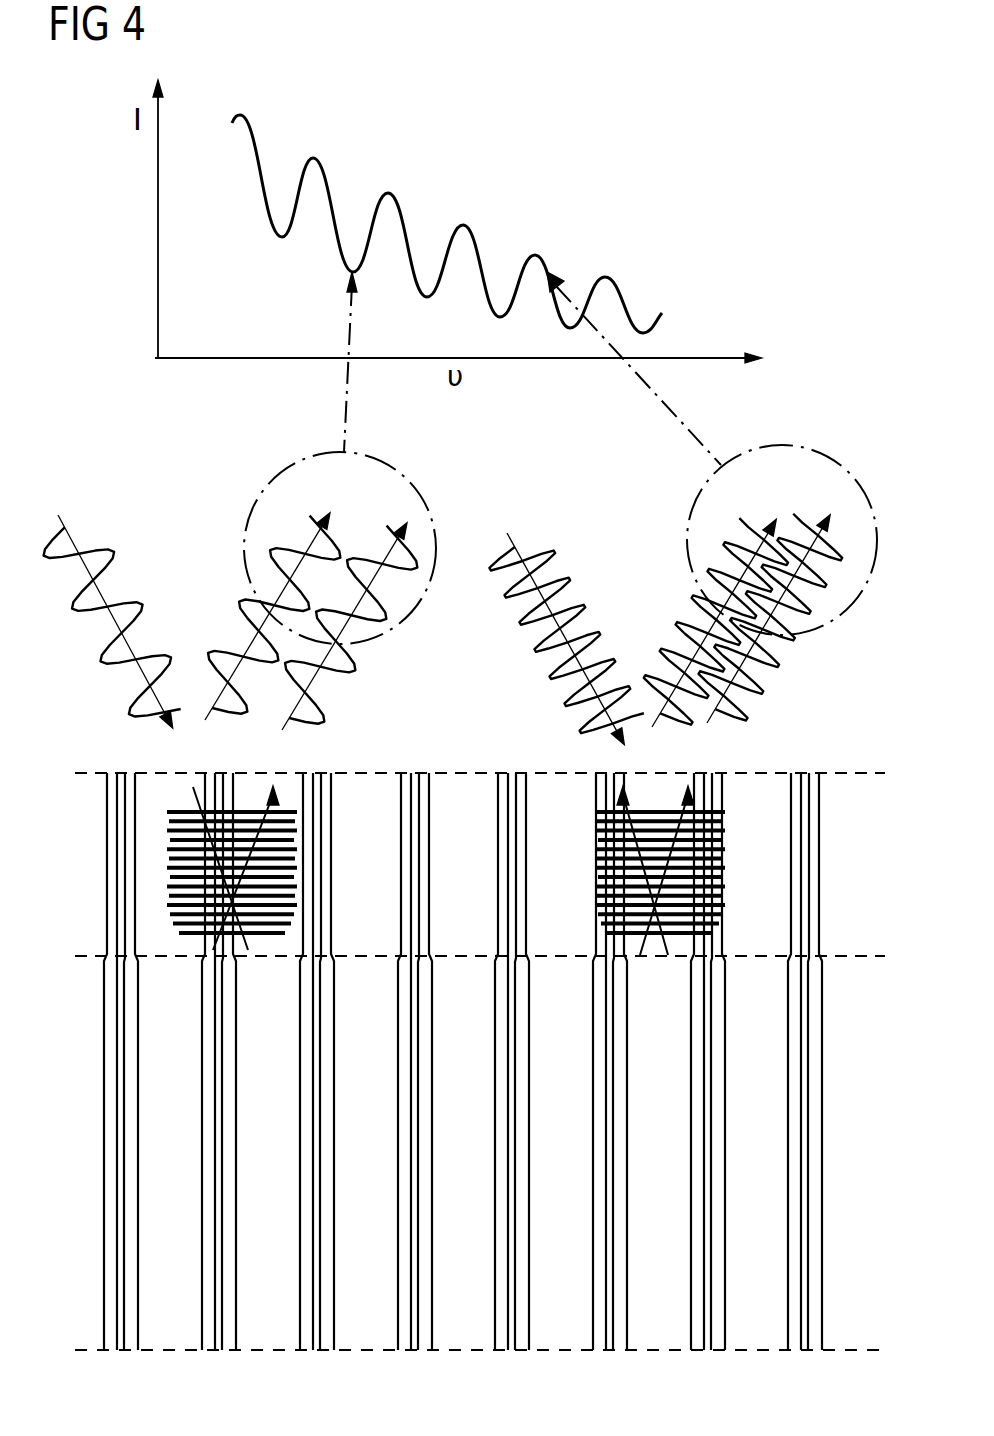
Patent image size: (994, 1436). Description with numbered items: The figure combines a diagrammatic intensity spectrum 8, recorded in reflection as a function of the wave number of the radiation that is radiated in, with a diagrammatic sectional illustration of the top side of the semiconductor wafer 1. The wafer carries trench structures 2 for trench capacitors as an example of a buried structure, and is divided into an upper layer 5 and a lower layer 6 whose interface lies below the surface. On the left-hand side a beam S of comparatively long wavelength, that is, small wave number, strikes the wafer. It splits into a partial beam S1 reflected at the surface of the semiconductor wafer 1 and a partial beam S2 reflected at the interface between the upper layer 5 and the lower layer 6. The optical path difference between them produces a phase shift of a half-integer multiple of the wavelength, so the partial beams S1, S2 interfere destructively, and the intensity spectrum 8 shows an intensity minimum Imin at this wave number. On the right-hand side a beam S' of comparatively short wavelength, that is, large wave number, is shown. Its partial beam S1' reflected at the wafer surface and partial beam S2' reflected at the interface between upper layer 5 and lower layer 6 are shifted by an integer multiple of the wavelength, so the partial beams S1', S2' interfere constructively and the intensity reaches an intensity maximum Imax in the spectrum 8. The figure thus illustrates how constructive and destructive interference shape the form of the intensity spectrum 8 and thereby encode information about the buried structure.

The semiconductor wafer 1 is at (100, 742).
The trench structures 2 is at (815, 775).
The upper layer 5 is at (885, 773).
The lower layer 6 is at (885, 960).
The intensity spectrum 8 is at (428, 172).
The beam S is at (115, 613).
The partial beam S1 is at (268, 616).
The partial beam S2 is at (345, 626).
The beam S' is at (566, 638).
The partial beam S1' is at (708, 623).
The partial beam S2' is at (768, 618).
The intensity minimum Imin is at (352, 272).
The intensity maximum Imax is at (538, 252).